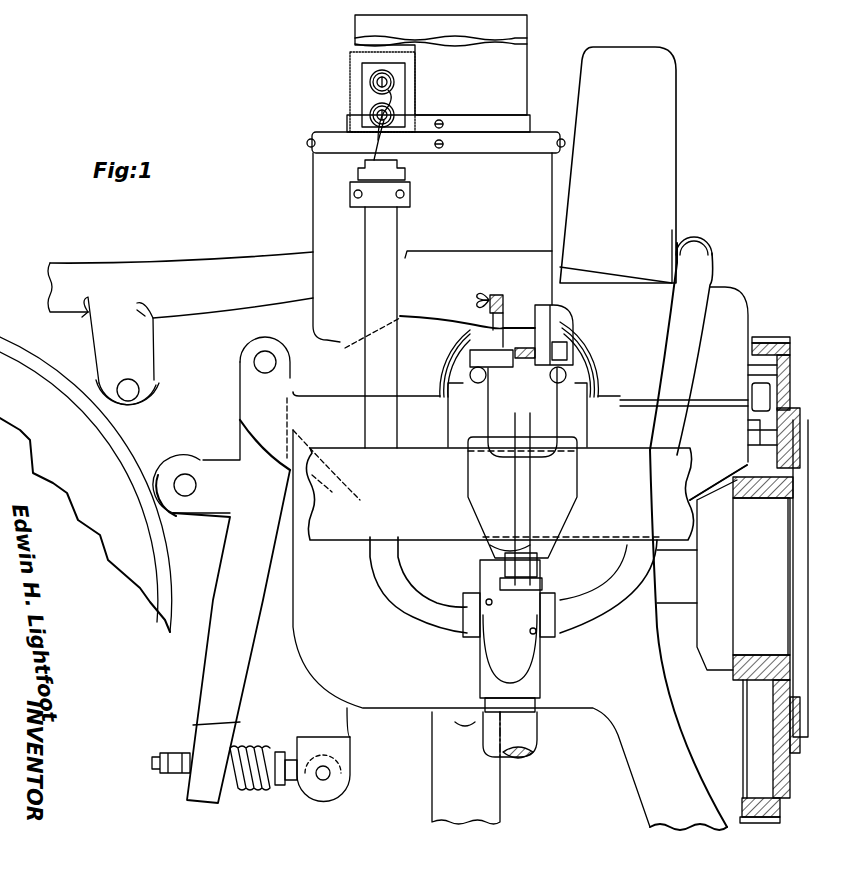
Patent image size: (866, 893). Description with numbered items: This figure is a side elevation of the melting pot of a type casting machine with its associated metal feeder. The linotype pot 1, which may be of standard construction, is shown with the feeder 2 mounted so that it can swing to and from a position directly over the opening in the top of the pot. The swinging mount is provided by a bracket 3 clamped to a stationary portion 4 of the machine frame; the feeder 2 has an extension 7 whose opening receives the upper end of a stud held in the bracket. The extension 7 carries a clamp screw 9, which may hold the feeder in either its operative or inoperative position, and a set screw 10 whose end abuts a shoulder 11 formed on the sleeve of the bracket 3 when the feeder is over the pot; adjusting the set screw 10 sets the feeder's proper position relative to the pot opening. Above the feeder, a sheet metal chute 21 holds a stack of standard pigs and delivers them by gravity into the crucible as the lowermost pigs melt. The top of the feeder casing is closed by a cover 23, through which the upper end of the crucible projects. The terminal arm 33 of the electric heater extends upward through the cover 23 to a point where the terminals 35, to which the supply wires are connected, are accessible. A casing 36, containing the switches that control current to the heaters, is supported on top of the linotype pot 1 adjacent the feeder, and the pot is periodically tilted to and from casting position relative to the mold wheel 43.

The linotype pot 1 is at (312, 625).
The feeder 2 is at (330, 240).
The bracket 3 is at (555, 465).
The stationary portion 4 is at (499, 494).
The extension 7 is at (475, 252).
The clamp screw 9 is at (477, 303).
The set screw 10 is at (560, 355).
The shoulder 11 is at (518, 372).
The sheet metal chute 21 is at (503, 68).
The cover 23 is at (530, 140).
The terminal arm 33 is at (393, 70).
The terminals 35 is at (370, 112).
The casing 36 is at (656, 176).
The mold wheel 43 is at (788, 356).